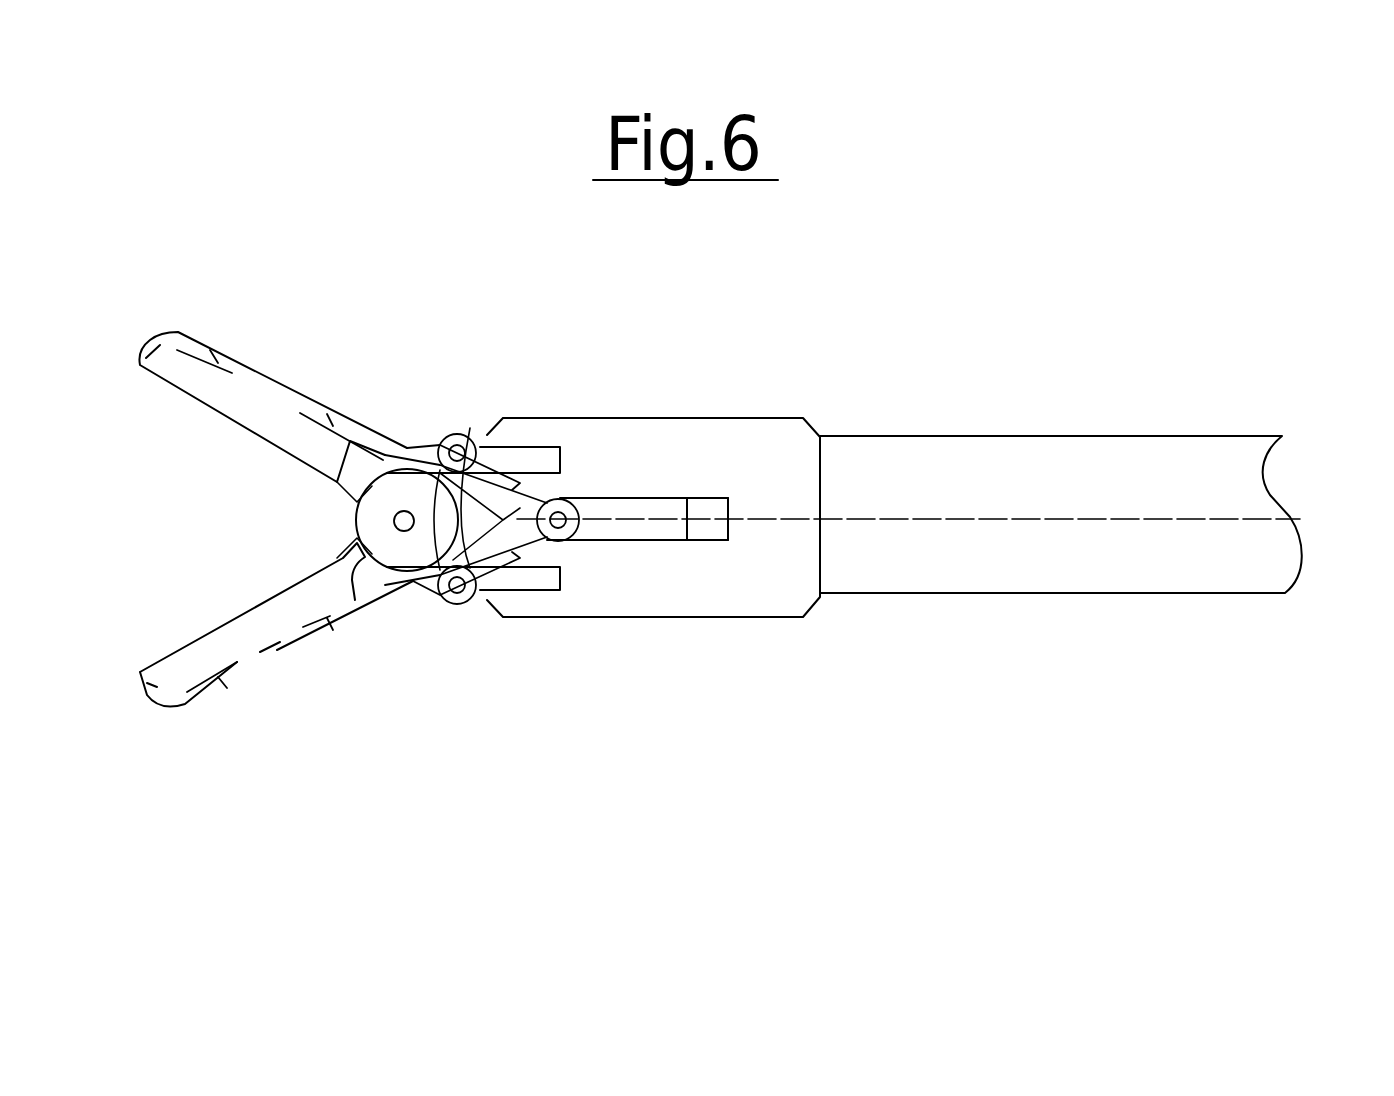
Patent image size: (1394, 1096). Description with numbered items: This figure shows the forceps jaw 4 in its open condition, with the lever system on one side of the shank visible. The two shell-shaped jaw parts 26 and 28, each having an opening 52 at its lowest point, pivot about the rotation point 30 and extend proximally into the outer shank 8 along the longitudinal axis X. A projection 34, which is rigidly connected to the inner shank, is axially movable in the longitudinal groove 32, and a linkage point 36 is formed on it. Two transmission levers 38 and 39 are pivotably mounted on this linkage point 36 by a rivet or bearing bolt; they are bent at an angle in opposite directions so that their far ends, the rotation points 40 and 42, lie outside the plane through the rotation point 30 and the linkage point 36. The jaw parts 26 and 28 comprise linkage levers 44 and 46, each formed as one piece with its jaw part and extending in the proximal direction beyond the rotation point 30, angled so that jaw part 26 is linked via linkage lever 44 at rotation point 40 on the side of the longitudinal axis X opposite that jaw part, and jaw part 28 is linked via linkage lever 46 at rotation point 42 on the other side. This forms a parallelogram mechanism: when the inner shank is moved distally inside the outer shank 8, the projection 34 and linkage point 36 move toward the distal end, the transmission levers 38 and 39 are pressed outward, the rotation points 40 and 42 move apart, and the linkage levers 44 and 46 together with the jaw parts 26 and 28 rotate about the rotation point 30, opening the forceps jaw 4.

The forceps jaw 4 is at (237, 325).
The outer shank 8 is at (1122, 436).
The jaw part 26 is at (190, 707).
The jaw part 28 is at (162, 335).
The rotation point 30 is at (405, 511).
The longitudinal groove 32 is at (720, 535).
The projection 34 is at (675, 533).
The linkage point 36 is at (576, 502).
The transmission lever 38 is at (547, 455).
The transmission lever 39 is at (515, 550).
The rotation point 40 is at (464, 434).
The rotation point 42 is at (457, 606).
The linkage lever 44 is at (440, 445).
The linkage lever 46 is at (438, 573).
The opening 52 is at (272, 388).
The longitudinal axis X is at (1290, 517).